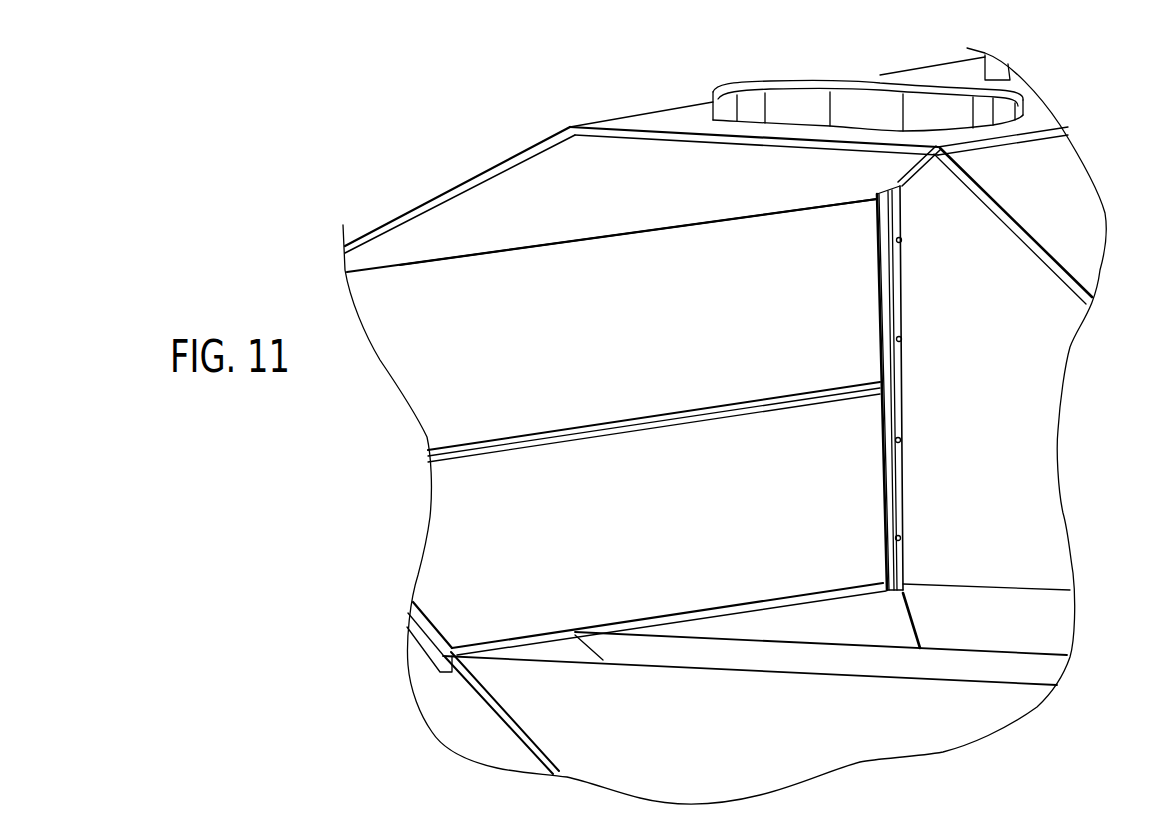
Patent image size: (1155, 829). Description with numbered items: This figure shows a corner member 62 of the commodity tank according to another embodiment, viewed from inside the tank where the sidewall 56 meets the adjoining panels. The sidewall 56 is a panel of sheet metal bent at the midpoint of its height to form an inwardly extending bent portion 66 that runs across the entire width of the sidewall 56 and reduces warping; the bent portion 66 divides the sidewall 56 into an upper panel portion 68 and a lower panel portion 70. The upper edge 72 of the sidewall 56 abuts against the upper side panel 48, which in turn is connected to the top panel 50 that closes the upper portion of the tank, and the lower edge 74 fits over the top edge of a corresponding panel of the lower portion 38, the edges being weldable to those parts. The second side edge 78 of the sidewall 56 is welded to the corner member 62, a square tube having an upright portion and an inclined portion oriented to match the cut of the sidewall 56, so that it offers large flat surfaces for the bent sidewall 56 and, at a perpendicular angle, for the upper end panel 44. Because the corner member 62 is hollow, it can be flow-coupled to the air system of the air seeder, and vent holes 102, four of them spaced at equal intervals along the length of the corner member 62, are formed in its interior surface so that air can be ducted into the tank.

The lower portion 38 is at (984, 604).
The upper end panel 44 is at (1005, 381).
The upper side panel 48 is at (455, 183).
The top panel 50 is at (663, 118).
The sidewall 56 is at (385, 256).
The corner member 62 is at (895, 263).
The bent portion 66 is at (600, 428).
The upper panel portion 68 is at (660, 331).
The lower panel portion 70 is at (671, 531).
The upper edge 72 is at (563, 240).
The lower edge 74 is at (508, 635).
The second side edge 78 is at (878, 313).
The vent holes 102 is at (901, 240).